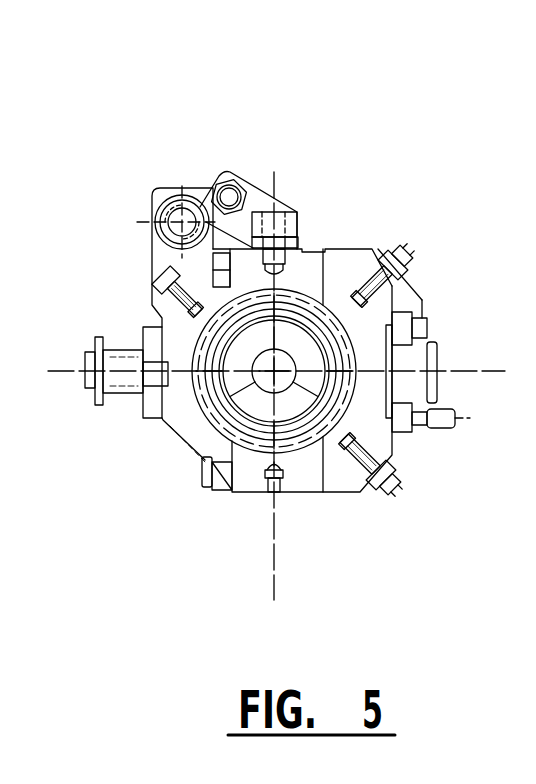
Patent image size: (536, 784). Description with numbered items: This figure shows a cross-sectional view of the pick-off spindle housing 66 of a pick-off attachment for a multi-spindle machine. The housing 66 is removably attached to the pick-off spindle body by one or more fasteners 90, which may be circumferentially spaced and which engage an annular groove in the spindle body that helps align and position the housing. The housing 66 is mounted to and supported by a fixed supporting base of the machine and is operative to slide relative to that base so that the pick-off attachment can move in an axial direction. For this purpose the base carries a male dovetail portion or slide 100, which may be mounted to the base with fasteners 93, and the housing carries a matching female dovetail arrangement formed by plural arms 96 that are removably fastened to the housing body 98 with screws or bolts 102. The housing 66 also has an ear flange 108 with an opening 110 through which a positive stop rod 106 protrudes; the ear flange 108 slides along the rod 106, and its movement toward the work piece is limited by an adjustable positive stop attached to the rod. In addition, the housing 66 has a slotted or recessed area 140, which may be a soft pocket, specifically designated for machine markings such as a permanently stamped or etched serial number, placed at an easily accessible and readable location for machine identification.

The pick-off spindle housing 66 is at (322, 126).
The slotted area 140 is at (324, 208).
The opening 110 is at (175, 202).
The positive stop rod 106 is at (190, 207).
The housing body 98 is at (351, 249).
The arms 96 is at (384, 247).
The screws or bolts 102 is at (407, 263).
The male dovetail portion or slide 100 is at (424, 470).
The fasteners 93 is at (441, 426).
The fasteners 90 is at (277, 494).
The ear flange 108 is at (153, 210).